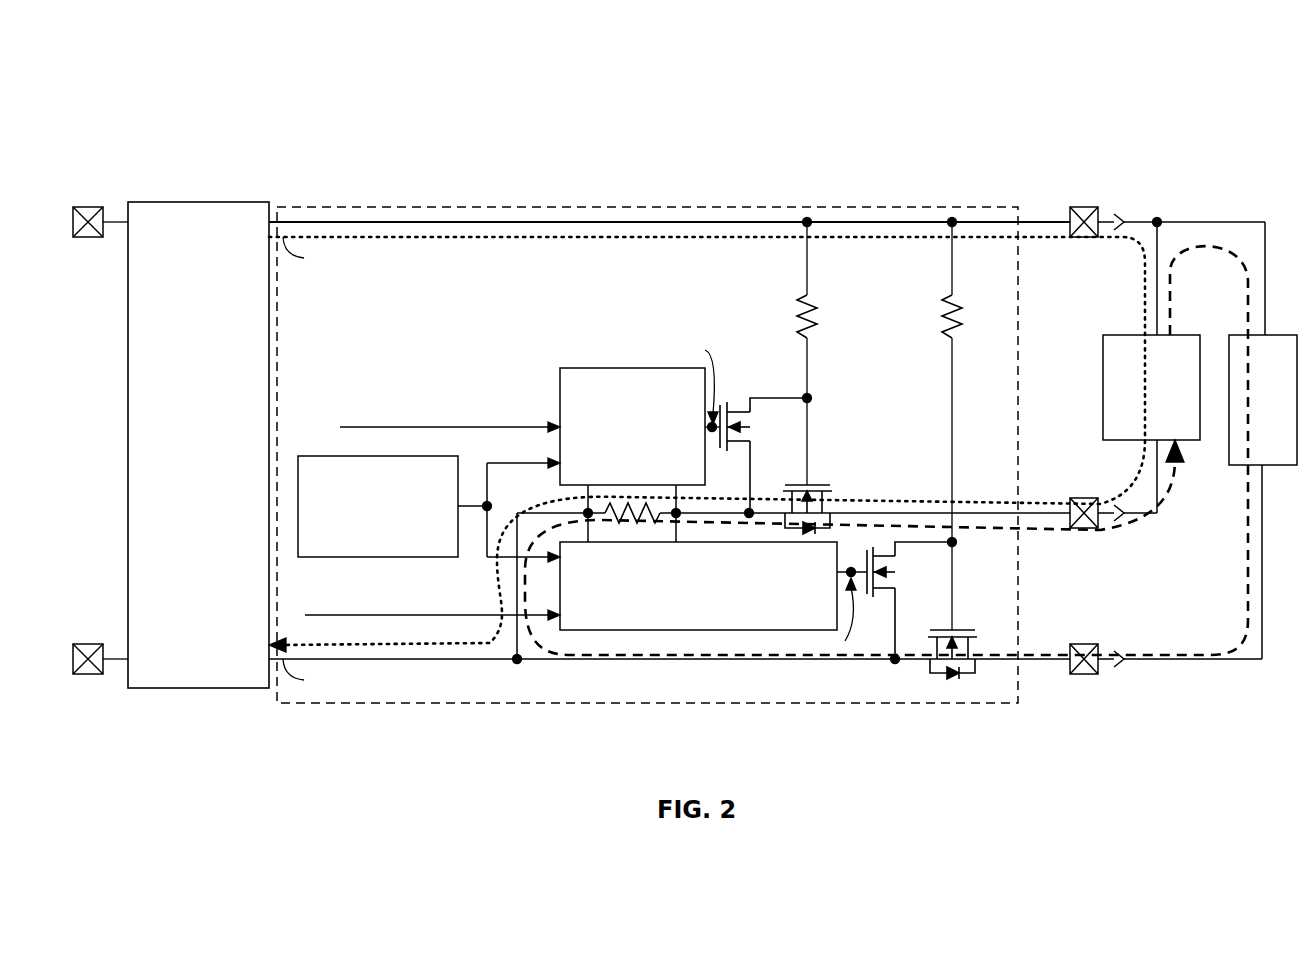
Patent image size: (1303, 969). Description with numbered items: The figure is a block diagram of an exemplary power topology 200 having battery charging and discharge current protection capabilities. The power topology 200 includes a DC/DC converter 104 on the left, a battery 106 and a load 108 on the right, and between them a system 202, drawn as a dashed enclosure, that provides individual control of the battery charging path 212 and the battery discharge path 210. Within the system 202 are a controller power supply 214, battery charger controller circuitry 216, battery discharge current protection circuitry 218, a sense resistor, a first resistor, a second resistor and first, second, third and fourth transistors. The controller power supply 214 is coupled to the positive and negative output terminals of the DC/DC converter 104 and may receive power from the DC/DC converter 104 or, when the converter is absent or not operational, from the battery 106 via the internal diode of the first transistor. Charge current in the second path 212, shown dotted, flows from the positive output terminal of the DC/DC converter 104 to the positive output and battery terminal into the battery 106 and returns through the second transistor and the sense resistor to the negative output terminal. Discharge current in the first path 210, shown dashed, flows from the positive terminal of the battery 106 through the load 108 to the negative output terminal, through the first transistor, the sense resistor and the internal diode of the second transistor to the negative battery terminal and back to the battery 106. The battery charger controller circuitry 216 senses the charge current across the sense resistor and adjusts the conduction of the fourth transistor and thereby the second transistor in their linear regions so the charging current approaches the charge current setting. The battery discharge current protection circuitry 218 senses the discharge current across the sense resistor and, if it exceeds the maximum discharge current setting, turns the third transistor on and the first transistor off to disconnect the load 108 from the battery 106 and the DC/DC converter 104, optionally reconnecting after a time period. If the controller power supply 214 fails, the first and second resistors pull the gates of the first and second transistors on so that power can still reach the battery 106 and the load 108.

The power topology 200 is at (685, 369).
The DC/DC converter 104 is at (197, 204).
The system 202 is at (613, 206).
The controller power supply 214 is at (348, 457).
The battery charger controller circuitry 216 is at (582, 370).
The battery discharge current protection circuitry 218 is at (698, 586).
The second (charging) path 212 is at (1133, 240).
The first (discharge) path 210 is at (1238, 250).
The battery 106 is at (1104, 427).
The load 108 is at (1230, 450).